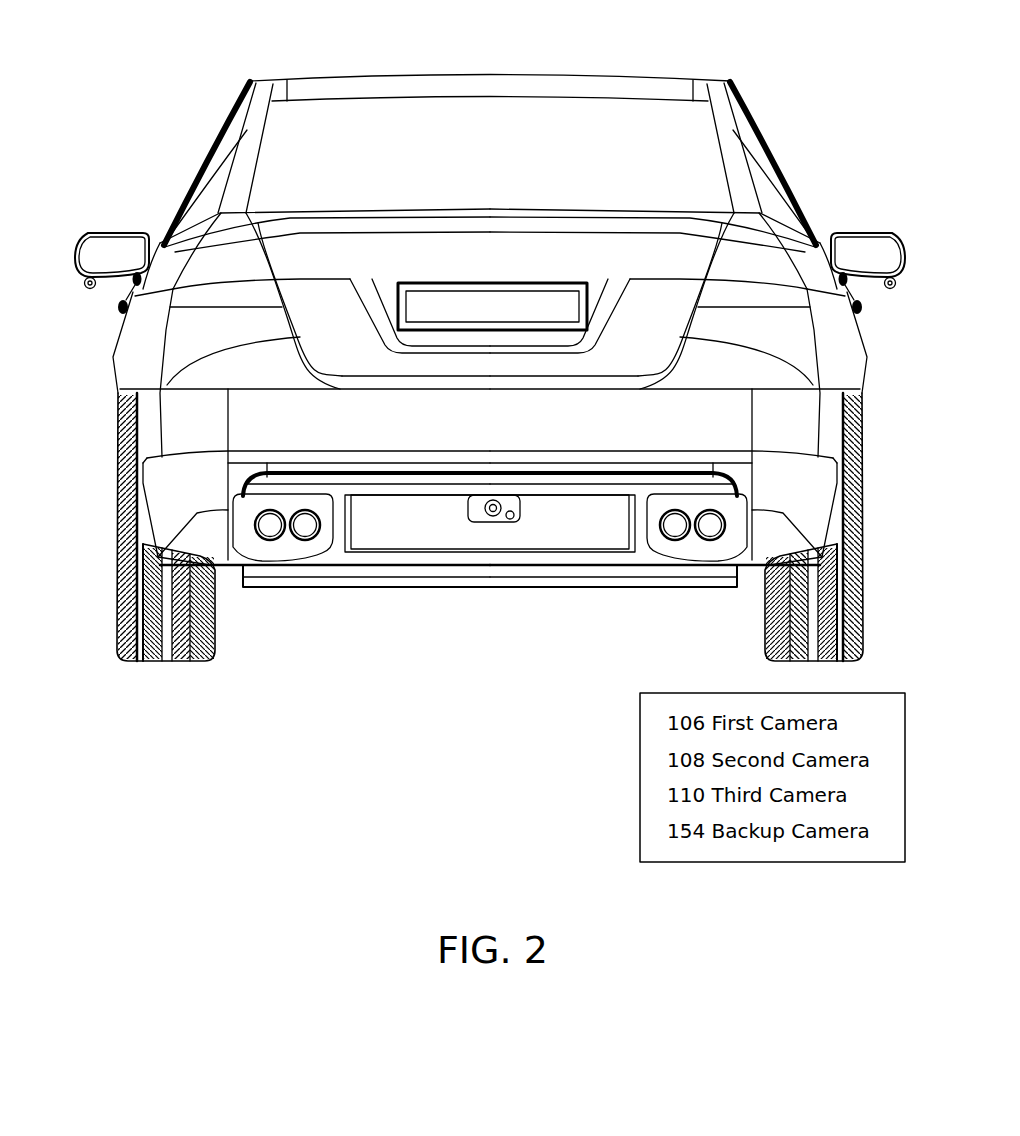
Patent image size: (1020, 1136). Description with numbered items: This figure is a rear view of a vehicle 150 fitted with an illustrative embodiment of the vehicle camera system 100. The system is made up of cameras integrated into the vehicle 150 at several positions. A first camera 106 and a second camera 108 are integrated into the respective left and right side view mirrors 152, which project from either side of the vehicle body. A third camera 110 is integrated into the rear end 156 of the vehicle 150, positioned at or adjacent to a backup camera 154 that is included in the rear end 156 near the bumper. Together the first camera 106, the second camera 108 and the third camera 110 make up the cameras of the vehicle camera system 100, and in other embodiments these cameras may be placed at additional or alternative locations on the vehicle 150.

The vehicle camera system 100 is at (122, 82).
The first camera 106 is at (888, 289).
The second camera 108 is at (82, 289).
The third camera 110 is at (520, 517).
The vehicle 150 is at (405, 68).
The side view mirrors 152 is at (115, 257).
The backup camera 154 is at (487, 500).
The rear end 156 is at (388, 540).